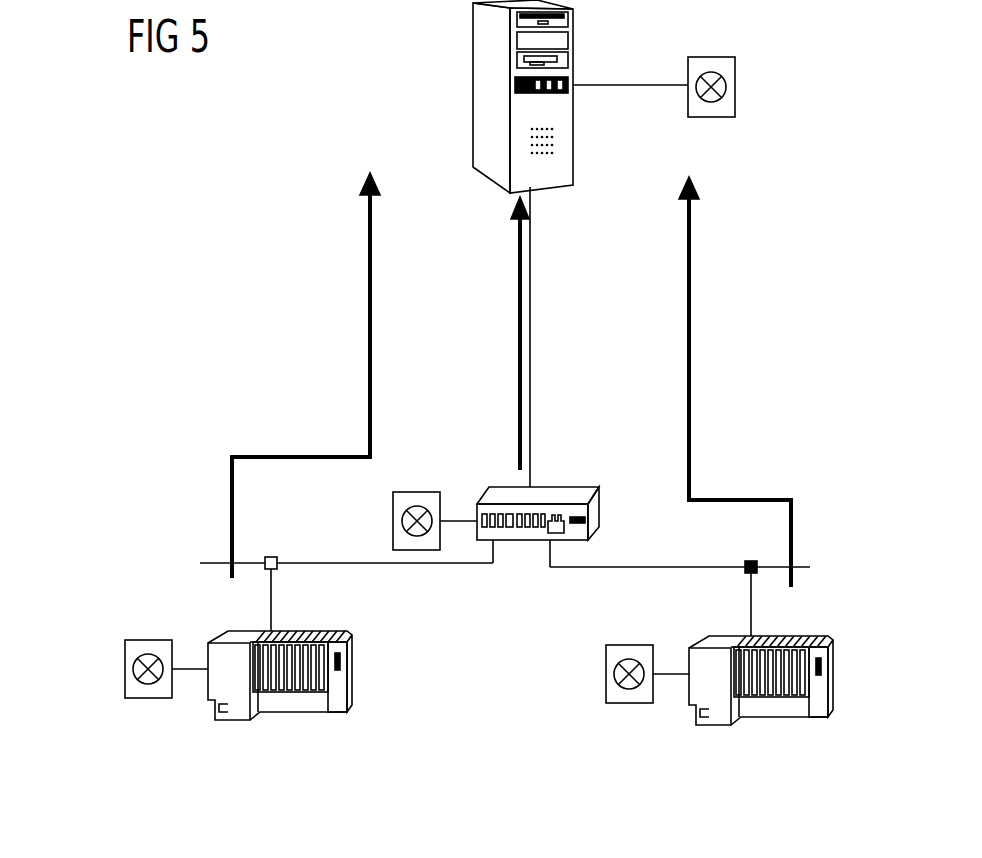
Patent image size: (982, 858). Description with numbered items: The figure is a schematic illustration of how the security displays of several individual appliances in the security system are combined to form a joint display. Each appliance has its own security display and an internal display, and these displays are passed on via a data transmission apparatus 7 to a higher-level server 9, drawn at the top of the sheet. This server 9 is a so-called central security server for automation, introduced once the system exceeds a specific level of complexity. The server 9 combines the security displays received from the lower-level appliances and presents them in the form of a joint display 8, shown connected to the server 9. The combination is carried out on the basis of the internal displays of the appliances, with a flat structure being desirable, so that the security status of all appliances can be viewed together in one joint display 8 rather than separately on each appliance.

The data transmission apparatus 7 is at (366, 360).
The joint display 8 is at (735, 90).
The server 9 is at (473, 76).